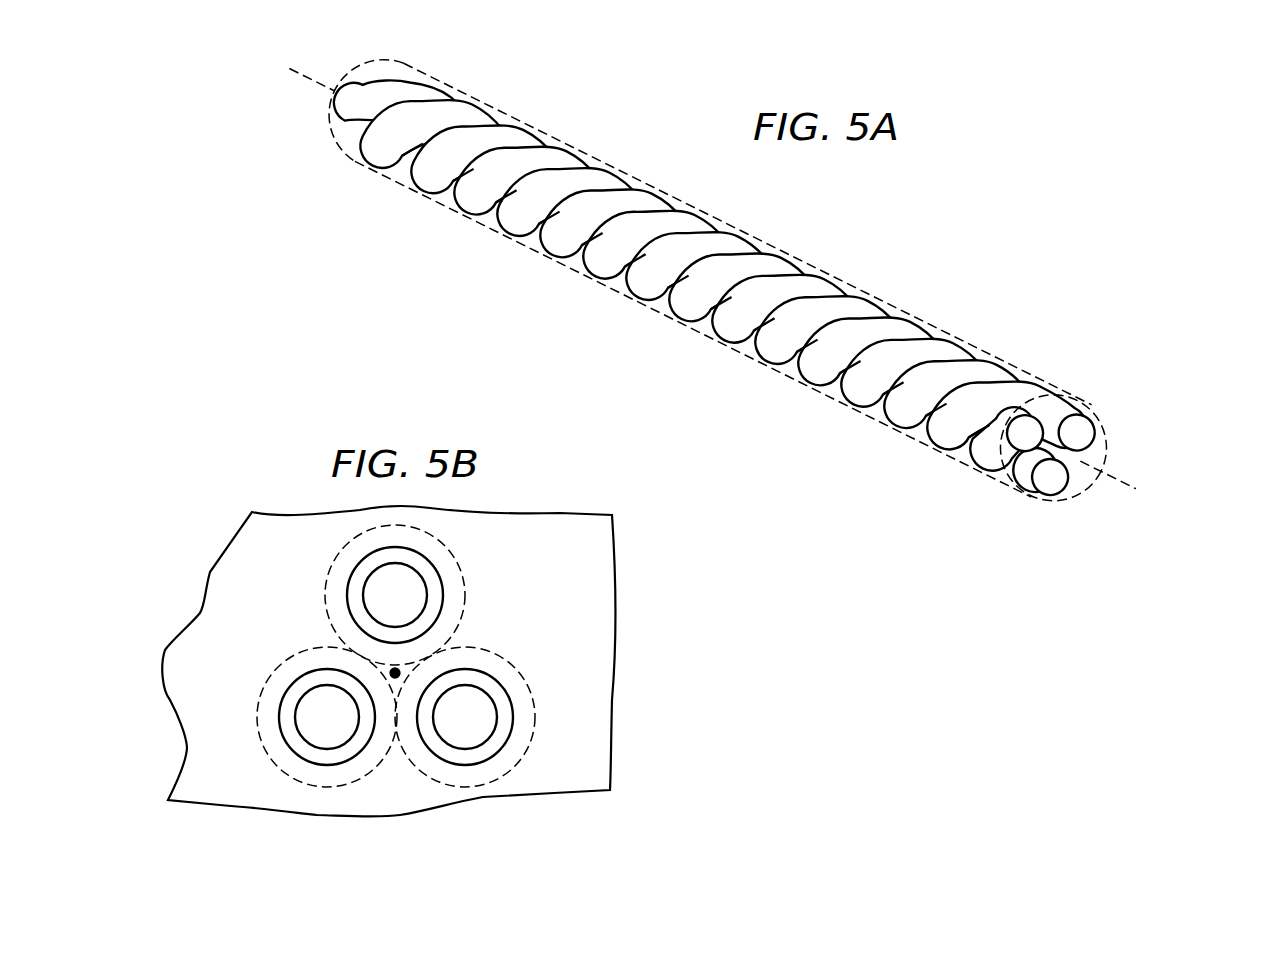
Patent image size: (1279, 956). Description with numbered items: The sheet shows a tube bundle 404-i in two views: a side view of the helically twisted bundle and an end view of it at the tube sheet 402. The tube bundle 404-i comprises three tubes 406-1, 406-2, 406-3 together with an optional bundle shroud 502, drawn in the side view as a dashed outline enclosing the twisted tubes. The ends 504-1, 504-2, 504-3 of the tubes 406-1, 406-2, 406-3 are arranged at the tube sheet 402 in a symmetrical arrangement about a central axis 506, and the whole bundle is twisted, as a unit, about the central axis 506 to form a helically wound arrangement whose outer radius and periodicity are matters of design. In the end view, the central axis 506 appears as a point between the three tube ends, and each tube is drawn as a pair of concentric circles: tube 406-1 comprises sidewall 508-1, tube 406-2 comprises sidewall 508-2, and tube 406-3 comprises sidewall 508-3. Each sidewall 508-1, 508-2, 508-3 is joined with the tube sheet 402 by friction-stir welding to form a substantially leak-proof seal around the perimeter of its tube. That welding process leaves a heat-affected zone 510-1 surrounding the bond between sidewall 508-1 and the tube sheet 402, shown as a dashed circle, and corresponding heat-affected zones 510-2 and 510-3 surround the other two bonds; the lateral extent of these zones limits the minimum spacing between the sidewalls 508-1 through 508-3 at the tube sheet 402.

In FIG. 5A, the tube bundle 404-i is at (946, 262).
In FIG. 5B, the tube bundle 404-i is at (194, 572).
In FIG. 5B, the tube sheet 402 is at (597, 557).
In FIG. 5A, the bundle shroud 502 is at (646, 309).
In FIG. 5A, the end of tube 504-1 is at (1082, 426).
In FIG. 5A, the end of tube 504-2 is at (959, 455).
In FIG. 5A, the end of tube 504-3 is at (1108, 498).
In FIG. 5A, the tube 406-1 is at (1080, 432).
In FIG. 5B, the tube 406-1 is at (369, 607).
In FIG. 5A, the tube 406-2 is at (1022, 436).
In FIG. 5B, the tube 406-2 is at (301, 729).
In FIG. 5A, the tube 406-3 is at (1057, 480).
In FIG. 5B, the tube 406-3 is at (439, 729).
In FIG. 5A, the central axis 506 is at (1121, 485).
In FIG. 5B, the central axis 506 is at (391, 670).
In FIG. 5B, the sidewall 508-1 is at (441, 591).
In FIG. 5B, the sidewall 508-2 is at (294, 751).
In FIG. 5B, the sidewall 508-3 is at (500, 748).
In FIG. 5B, the heat-affected zone 510-1 is at (329, 580).
In FIG. 5B, the heat-affected zone 510-2 is at (262, 690).
In FIG. 5B, the heat-affected zone 510-3 is at (497, 653).